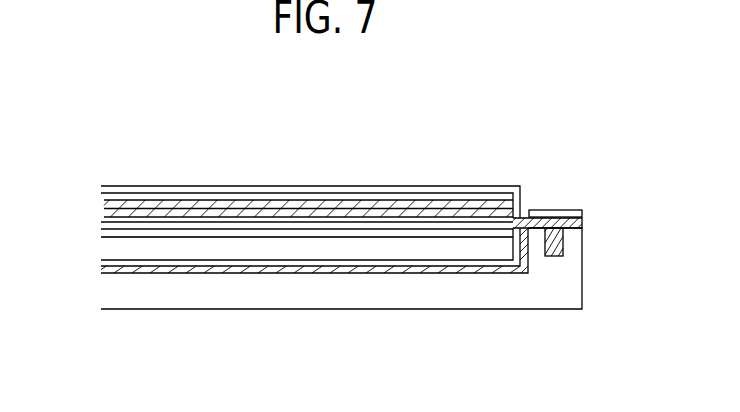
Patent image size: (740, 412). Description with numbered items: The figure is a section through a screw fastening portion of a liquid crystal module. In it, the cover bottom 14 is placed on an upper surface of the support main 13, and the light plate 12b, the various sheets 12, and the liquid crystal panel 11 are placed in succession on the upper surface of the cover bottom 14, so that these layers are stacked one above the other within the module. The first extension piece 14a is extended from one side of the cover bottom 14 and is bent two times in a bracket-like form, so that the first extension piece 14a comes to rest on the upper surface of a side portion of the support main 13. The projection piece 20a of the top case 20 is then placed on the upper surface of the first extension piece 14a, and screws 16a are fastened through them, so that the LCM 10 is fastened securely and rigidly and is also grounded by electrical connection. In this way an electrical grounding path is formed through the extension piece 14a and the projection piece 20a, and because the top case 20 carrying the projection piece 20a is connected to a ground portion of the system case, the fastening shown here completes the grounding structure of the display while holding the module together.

The LCM 10 is at (362, 166).
The liquid crystal panel 11 is at (102, 204).
The various sheets 12 is at (101, 229).
The light plate 12b is at (105, 251).
The support main 13 is at (553, 296).
The cover bottom 14 is at (433, 275).
The first extension piece 14a is at (583, 224).
The screws 16a is at (555, 210).
The top case 20 is at (472, 186).
The projection piece 20a is at (583, 213).